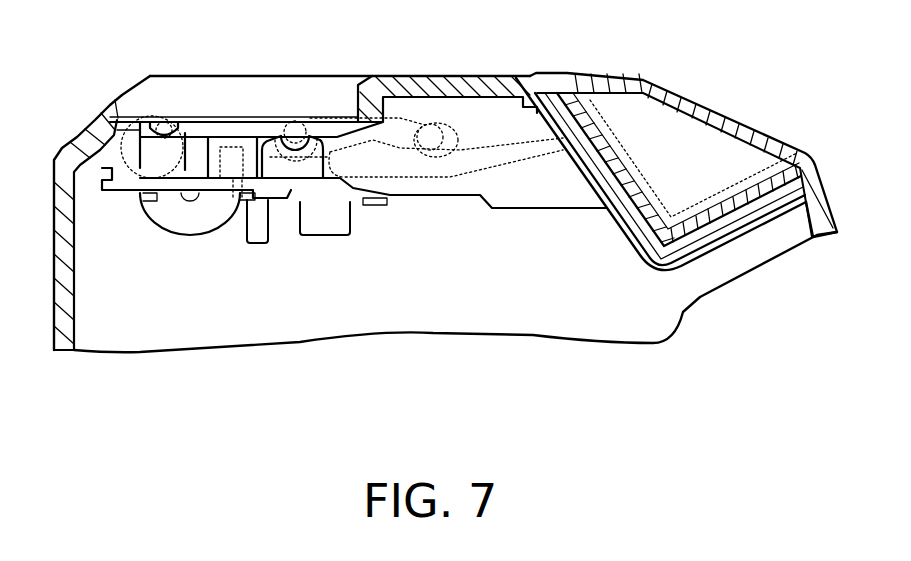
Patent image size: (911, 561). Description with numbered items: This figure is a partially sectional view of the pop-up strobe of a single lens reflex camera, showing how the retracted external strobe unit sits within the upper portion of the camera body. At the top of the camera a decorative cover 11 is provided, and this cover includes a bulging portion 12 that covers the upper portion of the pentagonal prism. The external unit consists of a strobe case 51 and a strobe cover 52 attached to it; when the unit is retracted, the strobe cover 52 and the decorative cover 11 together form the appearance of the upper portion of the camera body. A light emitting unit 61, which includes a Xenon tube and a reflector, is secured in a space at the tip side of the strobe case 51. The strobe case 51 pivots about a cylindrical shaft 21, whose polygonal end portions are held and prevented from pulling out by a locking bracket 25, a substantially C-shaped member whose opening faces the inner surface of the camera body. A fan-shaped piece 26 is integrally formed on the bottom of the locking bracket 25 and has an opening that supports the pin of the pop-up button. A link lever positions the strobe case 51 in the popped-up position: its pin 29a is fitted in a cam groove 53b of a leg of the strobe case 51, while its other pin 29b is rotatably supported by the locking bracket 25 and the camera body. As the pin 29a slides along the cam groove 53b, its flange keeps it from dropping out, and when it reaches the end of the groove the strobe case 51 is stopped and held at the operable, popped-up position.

The decorative cover 11 is at (55, 200).
The bulging portion 12 is at (818, 183).
The cylindrical shaft 21 is at (178, 132).
The locking bracket 25 is at (130, 192).
The fan-shaped piece 26 is at (196, 222).
The pin 29a is at (433, 128).
The pin 29b is at (300, 138).
The strobe case 51 is at (242, 78).
The strobe cover 52 is at (666, 90).
The cam groove 53b is at (373, 140).
The light emitting unit 61 is at (745, 222).